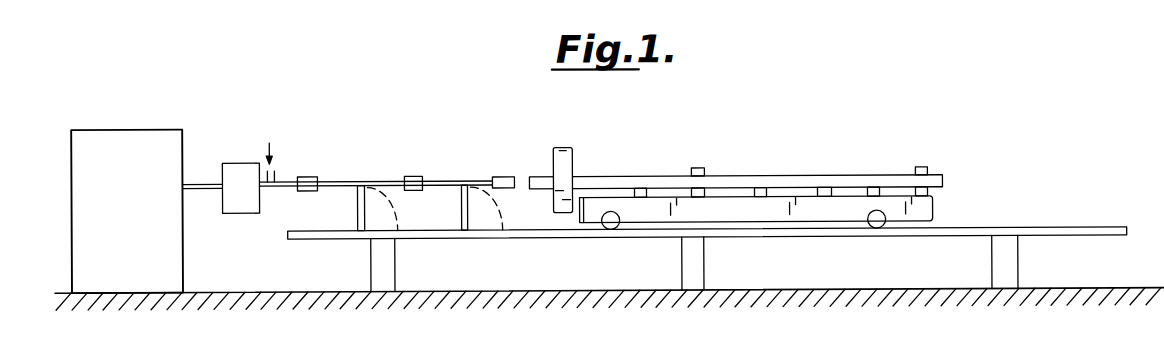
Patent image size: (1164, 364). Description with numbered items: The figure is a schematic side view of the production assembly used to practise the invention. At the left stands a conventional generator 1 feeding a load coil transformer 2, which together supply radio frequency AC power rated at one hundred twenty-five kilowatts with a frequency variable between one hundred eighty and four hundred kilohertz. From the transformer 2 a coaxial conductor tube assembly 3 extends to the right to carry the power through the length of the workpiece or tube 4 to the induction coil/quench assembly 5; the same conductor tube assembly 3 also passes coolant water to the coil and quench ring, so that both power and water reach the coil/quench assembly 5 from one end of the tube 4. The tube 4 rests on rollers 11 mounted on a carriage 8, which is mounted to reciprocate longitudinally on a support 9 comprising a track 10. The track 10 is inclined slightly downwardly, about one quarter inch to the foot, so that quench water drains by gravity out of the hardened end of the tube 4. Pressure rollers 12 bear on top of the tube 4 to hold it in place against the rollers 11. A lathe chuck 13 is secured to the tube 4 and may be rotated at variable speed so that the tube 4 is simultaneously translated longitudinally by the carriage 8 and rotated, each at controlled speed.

The generator 1 is at (148, 137).
The load coil transformer 2 is at (233, 168).
The coaxial conductor tube assembly 3 is at (354, 178).
The tube 4 is at (637, 181).
The induction coil/quench assembly 5 is at (498, 178).
The carriage 8 is at (921, 214).
The support 9 is at (1008, 263).
The track 10 is at (1033, 232).
The rollers 11 is at (706, 195).
The pressure rollers 12 is at (702, 170).
The lathe chuck 13 is at (563, 150).